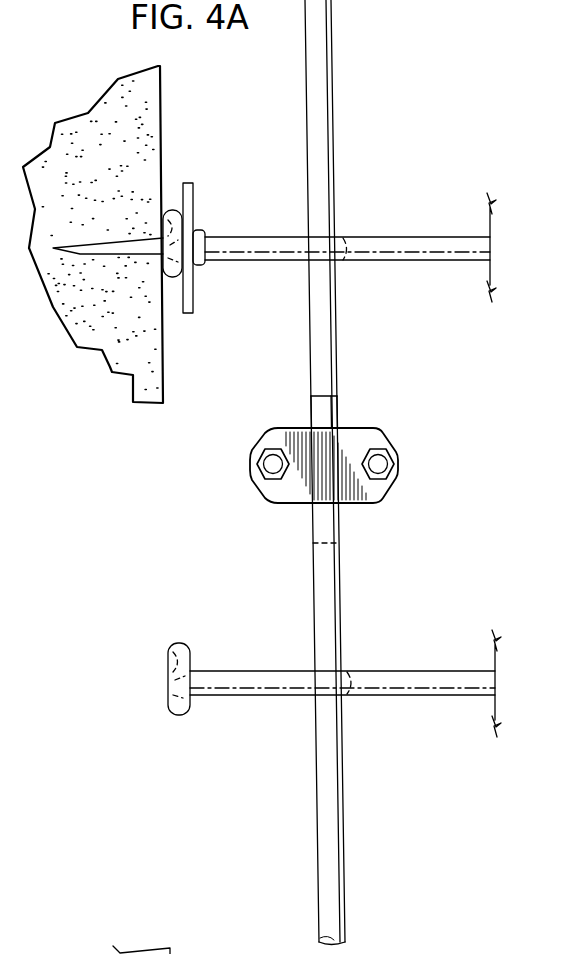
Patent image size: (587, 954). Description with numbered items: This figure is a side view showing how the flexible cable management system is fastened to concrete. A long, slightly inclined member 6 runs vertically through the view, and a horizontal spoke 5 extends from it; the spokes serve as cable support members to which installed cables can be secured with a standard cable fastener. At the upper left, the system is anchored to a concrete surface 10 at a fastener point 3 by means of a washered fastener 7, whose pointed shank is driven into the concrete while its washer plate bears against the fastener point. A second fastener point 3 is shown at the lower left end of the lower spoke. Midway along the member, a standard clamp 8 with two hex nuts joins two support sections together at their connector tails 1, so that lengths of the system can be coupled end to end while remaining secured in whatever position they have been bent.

The connector tail 1 is at (337, 340).
The fastener point 3 is at (172, 208).
The spoke 5 is at (415, 671).
The pole 6 is at (333, 52).
The washered fastener 7 is at (195, 290).
The standard clamp 8 is at (387, 490).
The concrete surface 10 is at (120, 380).